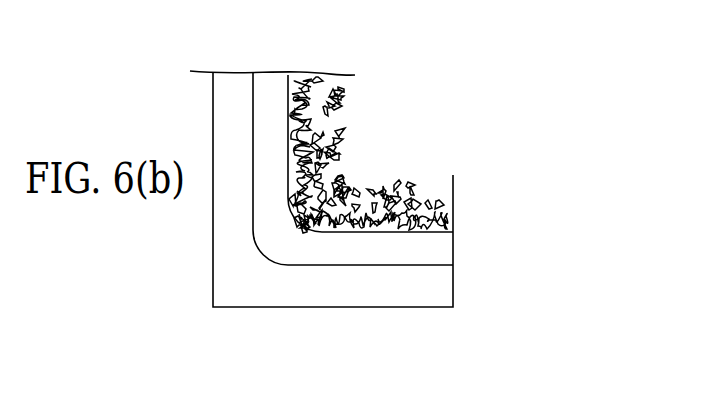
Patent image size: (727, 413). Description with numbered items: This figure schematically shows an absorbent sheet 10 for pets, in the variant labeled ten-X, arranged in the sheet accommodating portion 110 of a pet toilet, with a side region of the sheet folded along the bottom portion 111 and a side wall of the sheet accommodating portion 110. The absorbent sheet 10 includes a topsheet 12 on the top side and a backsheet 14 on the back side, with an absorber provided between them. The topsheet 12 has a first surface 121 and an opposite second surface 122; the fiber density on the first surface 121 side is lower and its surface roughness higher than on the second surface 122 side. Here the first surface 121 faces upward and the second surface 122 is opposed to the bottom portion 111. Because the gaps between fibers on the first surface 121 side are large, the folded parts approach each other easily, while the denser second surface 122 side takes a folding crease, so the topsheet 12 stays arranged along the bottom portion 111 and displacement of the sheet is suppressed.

The absorbent sheet 10 is at (470, 84).
The topsheet 12 is at (343, 57).
The backsheet 14 is at (273, 85).
The sheet accommodating portion 110 is at (242, 293).
The bottom portion 111 is at (311, 256).
The first surface 121 is at (432, 190).
The second surface 122 is at (368, 232).